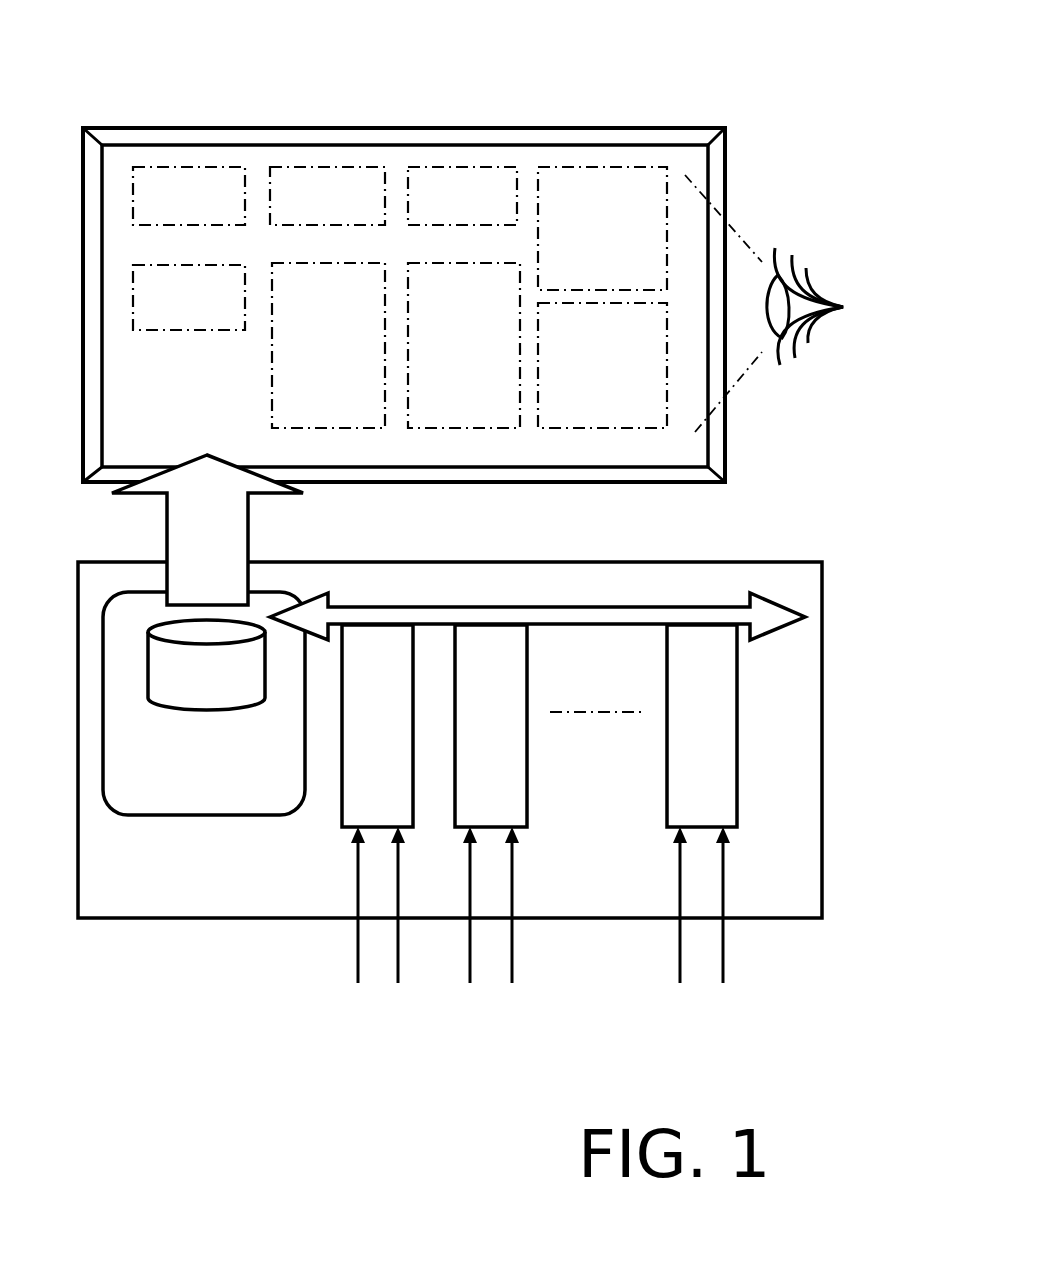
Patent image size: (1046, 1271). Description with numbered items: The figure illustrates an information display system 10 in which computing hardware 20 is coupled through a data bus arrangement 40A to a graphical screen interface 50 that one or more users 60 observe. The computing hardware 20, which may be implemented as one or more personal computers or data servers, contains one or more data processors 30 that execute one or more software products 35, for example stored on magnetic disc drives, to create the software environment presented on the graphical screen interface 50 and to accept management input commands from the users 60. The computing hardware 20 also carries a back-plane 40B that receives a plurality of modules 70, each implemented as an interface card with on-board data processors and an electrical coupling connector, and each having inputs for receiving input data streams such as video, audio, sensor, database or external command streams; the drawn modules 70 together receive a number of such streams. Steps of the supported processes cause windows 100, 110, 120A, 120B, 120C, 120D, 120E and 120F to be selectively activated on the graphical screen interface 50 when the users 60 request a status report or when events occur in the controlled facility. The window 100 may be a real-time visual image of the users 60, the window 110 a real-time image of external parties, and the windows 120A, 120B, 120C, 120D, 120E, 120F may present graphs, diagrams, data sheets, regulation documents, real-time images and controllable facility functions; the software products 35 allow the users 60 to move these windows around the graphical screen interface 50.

The information display system 10 is at (553, 78).
The computing hardware 20 is at (130, 876).
The data processor 30 is at (191, 772).
The software product 35 is at (191, 687).
The data bus arrangement 40A is at (181, 547).
The back-plane 40B is at (585, 615).
The graphical screen interface 50 is at (171, 409).
The user 60 is at (832, 364).
The module 70 is at (362, 737).
The window 100 is at (576, 232).
The window 110 is at (581, 374).
The window 120A is at (153, 209).
The window 120B is at (294, 209).
The window 120C is at (431, 206).
The window 120D is at (224, 301).
The window 120E is at (298, 349).
The window 120F is at (436, 349).